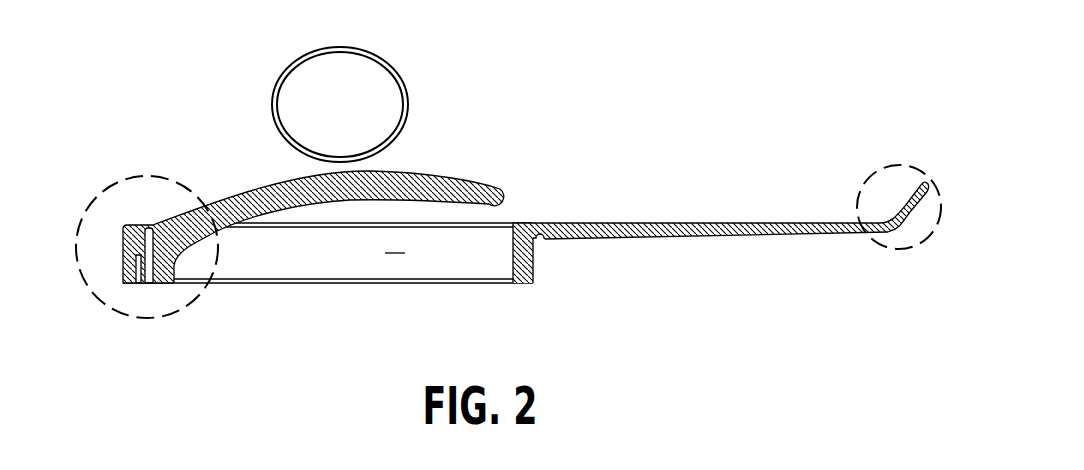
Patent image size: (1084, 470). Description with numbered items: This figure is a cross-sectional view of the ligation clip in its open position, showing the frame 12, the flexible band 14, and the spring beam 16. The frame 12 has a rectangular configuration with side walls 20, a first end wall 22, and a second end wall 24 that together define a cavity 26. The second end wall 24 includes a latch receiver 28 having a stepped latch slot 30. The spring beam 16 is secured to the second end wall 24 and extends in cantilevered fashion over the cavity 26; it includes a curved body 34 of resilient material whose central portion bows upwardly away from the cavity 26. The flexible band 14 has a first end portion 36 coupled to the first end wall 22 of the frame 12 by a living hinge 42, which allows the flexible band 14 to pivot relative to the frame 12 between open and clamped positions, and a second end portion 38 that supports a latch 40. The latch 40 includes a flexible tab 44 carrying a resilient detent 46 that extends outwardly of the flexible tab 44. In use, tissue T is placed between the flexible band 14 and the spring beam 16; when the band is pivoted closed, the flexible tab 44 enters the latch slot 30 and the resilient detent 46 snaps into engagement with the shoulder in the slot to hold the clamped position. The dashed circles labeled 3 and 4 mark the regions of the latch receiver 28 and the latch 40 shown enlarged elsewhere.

The tissue T is at (362, 52).
The detail circle of FIG. 3 is at (123, 180).
The detail circle of FIG. 4 is at (877, 168).
The frame 12 is at (277, 294).
The flexible band 14 is at (675, 212).
The spring beam 16 is at (455, 165).
The side walls 20 is at (468, 255).
The first end wall 22 is at (525, 263).
The second end wall 24 is at (127, 238).
The cavity 26 is at (393, 256).
The latch receiver 28 is at (150, 214).
The latch slot 30 is at (150, 263).
The curved body 34 is at (263, 187).
The first end portion 36 is at (568, 224).
The second end portion 38 is at (878, 236).
The latch 40 is at (906, 170).
The living hinge 42 is at (540, 227).
The flexible tab 44 is at (924, 200).
The resilient detent 46 is at (929, 192).